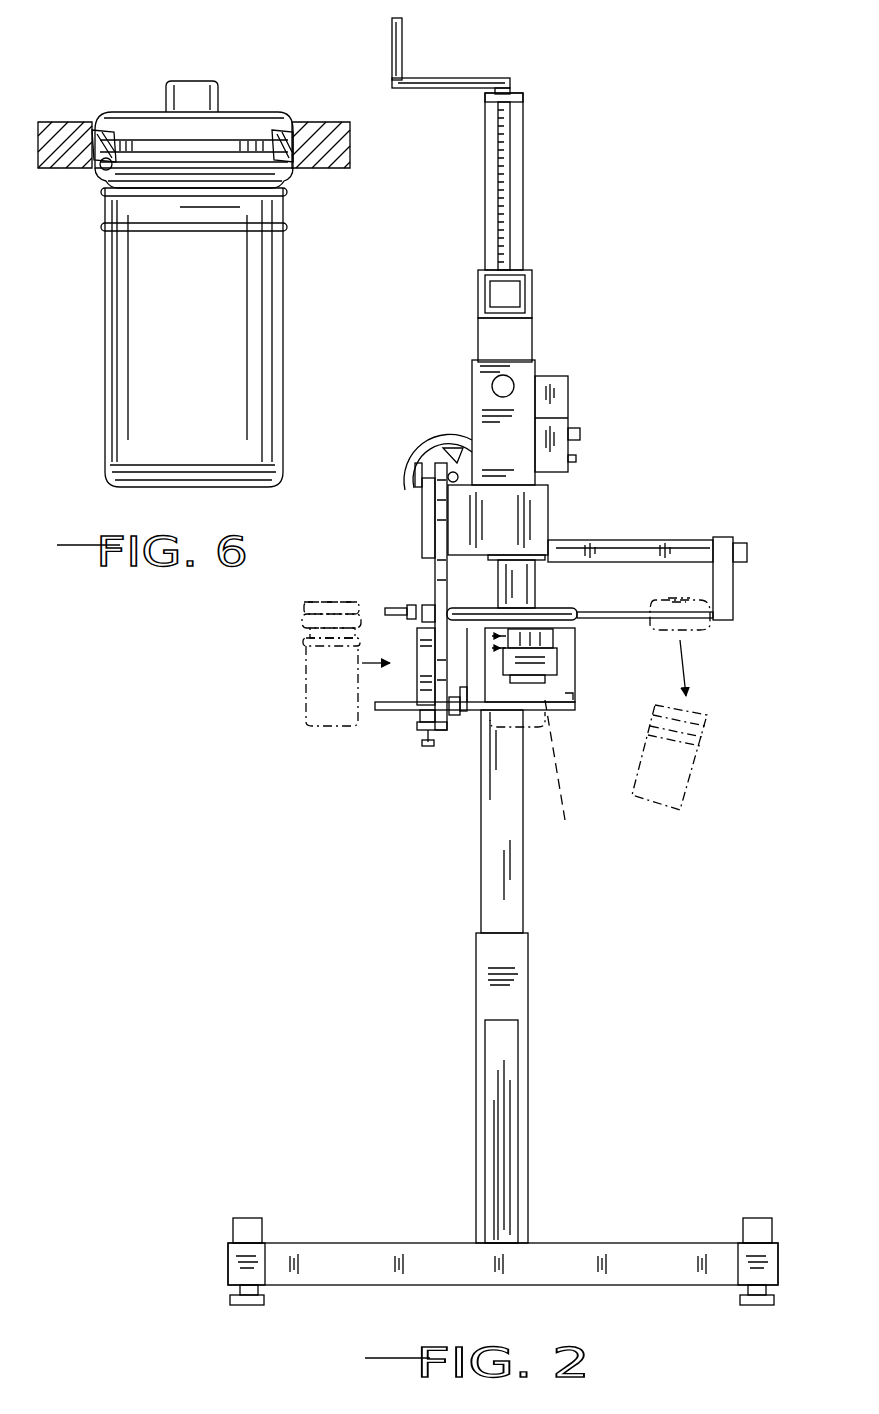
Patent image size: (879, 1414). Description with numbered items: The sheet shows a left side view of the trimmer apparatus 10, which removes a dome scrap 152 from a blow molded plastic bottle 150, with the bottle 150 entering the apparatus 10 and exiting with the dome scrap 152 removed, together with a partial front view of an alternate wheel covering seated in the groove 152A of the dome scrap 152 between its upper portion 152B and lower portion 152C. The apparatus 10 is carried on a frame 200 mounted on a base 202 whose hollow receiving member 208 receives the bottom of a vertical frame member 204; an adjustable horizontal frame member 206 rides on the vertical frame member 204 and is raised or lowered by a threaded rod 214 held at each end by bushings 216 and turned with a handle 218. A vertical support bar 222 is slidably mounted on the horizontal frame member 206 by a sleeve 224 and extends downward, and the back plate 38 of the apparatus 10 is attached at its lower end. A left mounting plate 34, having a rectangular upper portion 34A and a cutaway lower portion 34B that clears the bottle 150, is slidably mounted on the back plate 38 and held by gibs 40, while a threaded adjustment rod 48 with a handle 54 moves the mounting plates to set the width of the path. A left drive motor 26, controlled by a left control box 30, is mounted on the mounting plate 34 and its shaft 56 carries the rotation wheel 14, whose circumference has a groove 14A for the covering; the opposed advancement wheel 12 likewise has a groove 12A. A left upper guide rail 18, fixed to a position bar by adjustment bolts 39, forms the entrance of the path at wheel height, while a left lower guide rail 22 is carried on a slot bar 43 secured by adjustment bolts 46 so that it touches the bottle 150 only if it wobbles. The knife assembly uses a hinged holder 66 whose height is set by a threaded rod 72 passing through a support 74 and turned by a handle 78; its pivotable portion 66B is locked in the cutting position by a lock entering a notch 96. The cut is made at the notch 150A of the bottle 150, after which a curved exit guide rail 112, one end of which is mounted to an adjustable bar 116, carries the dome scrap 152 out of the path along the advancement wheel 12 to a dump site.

In FIG. 2, the trimmer apparatus 10 is at (728, 356).
In FIG. 6, the advancement wheel 12 is at (318, 130).
In FIG. 6, the groove 12A is at (296, 150).
In FIG. 6, the rotation wheel 14 is at (88, 124).
In FIG. 2, the rotation wheel 14 is at (570, 620).
In FIG. 6, the groove 14A is at (100, 160).
In FIG. 2, the left upper guide rail 18 is at (398, 609).
In FIG. 2, the left lower guide rail 22 is at (575, 785).
In FIG. 2, the left drive motor 26 is at (518, 456).
In FIG. 2, the left control box 30 is at (556, 392).
In FIG. 2, the left mounting plate 34 is at (458, 555).
In FIG. 2, the rectangular upper portion 34A is at (444, 510).
In FIG. 2, the cutaway lower portion 34B is at (420, 712).
In FIG. 2, the back plate 38 is at (426, 520).
In FIG. 2, the adjustment bolts 39 is at (410, 602).
In FIG. 2, the gibs 40 is at (430, 480).
In FIG. 2, the slot bar 43 is at (460, 730).
In FIG. 2, the adjustment bolts 46 is at (470, 725).
In FIG. 2, the threaded adjustment rod 48 is at (440, 462).
In FIG. 2, the handle 54 is at (454, 436).
In FIG. 2, the shaft 56 is at (520, 580).
In FIG. 2, the hinged holder 66 is at (398, 664).
In FIG. 2, the pivotable portion 66B is at (570, 660).
In FIG. 2, the threaded rod 72 is at (425, 723).
In FIG. 2, the support 74 is at (442, 730).
In FIG. 2, the handle 78 is at (432, 735).
In FIG. 2, the notch 96 is at (555, 690).
In FIG. 2, the exit guide rail 112 is at (716, 622).
In FIG. 2, the adjustable bar 116 is at (722, 542).
In FIG. 6, the bottle 150 is at (252, 286).
In FIG. 2, the bottle 150 is at (304, 702).
In FIG. 6, the notch 150A is at (272, 180).
In FIG. 6, the dome scrap 152 is at (196, 96).
In FIG. 2, the dome scrap 152 is at (718, 596).
In FIG. 6, the groove 152A is at (140, 138).
In FIG. 6, the upper portion 152B is at (152, 118).
In FIG. 6, the lower portion 152C is at (112, 178).
In FIG. 2, the frame 200 is at (492, 902).
In FIG. 2, the base 202 is at (354, 1240).
In FIG. 2, the vertical frame member 204 is at (512, 892).
In FIG. 2, the horizontal frame member 206 is at (528, 298).
In FIG. 2, the hollow receiving member 208 is at (505, 1065).
In FIG. 2, the threaded rod 214 is at (510, 132).
In FIG. 2, the bushings 216 is at (522, 100).
In FIG. 2, the handle 218 is at (404, 30).
In FIG. 2, the vertical support bar 222 is at (520, 336).
In FIG. 2, the sleeve 224 is at (532, 278).